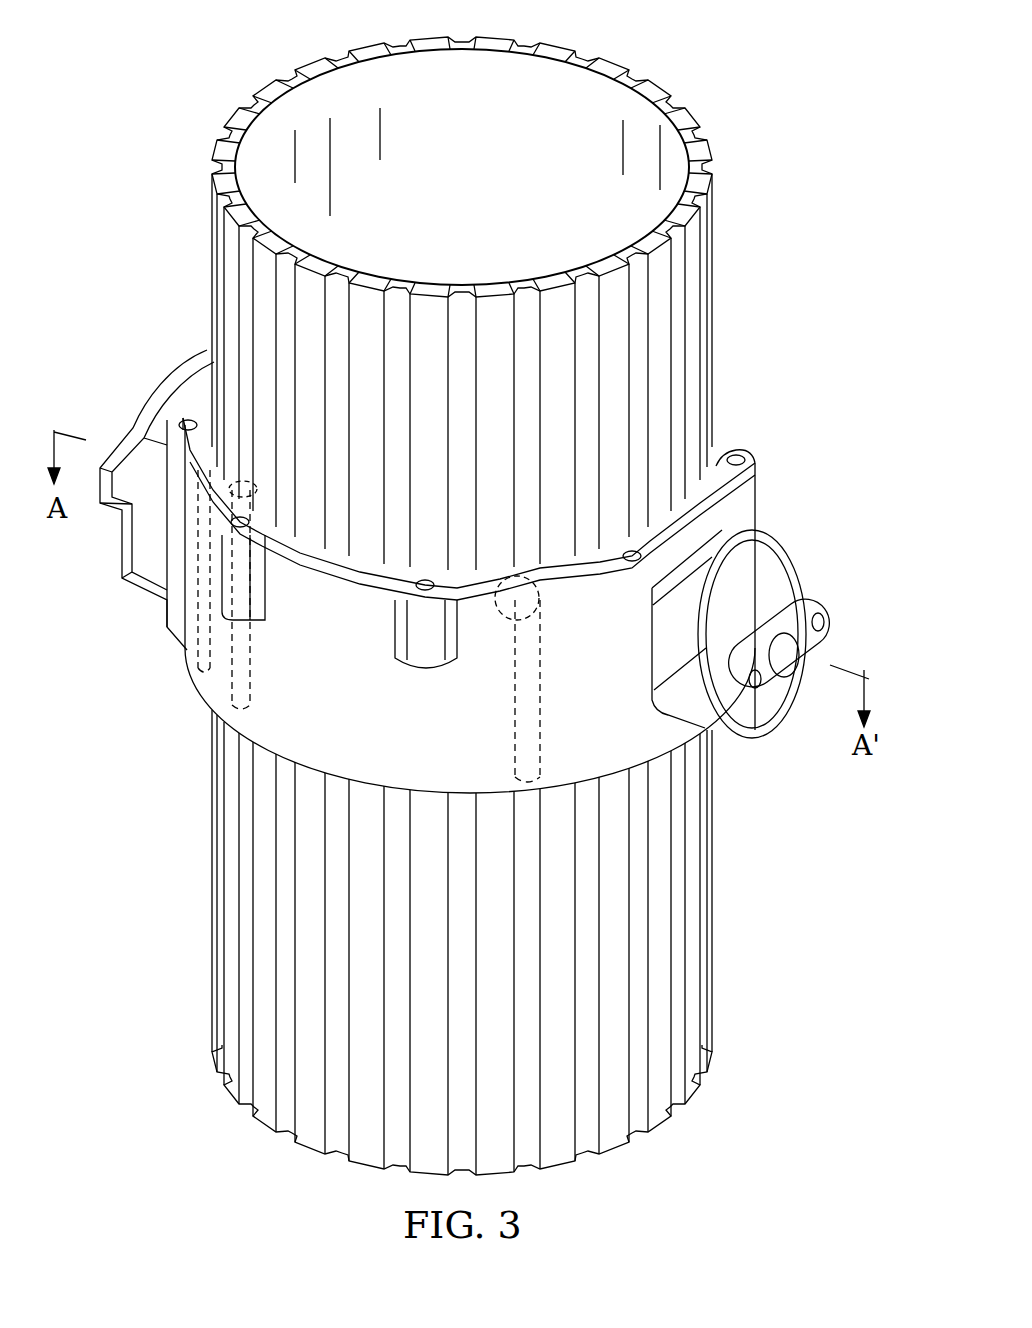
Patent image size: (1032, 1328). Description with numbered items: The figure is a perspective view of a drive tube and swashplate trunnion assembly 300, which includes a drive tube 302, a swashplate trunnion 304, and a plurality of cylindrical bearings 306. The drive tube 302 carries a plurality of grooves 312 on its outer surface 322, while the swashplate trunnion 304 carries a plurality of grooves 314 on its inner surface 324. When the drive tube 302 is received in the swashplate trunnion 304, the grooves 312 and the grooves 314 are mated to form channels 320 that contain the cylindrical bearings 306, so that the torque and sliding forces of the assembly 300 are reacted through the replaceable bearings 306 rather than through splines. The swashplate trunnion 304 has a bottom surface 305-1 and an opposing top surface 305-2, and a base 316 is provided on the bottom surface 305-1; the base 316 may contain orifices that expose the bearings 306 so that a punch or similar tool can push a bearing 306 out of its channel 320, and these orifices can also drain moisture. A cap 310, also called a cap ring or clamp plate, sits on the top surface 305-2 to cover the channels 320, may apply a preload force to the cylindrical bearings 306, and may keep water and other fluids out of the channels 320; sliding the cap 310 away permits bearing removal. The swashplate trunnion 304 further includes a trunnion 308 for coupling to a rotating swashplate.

The drive tube and swashplate trunnion assembly 300 is at (176, 70).
The drive tube 302 is at (210, 246).
The swashplate trunnion 304 is at (746, 505).
The bottom surface 305-1 is at (655, 767).
The top surface 305-2 is at (562, 605).
The cylindrical bearings 306 is at (513, 712).
The trunnion 308 is at (831, 610).
The cap 310 is at (362, 567).
The grooves 312 is at (527, 313).
The grooves 314 is at (285, 725).
The base 316 is at (204, 686).
The channels 320 is at (495, 578).
The outer surface 322 is at (692, 322).
The inner surface 324 is at (230, 497).